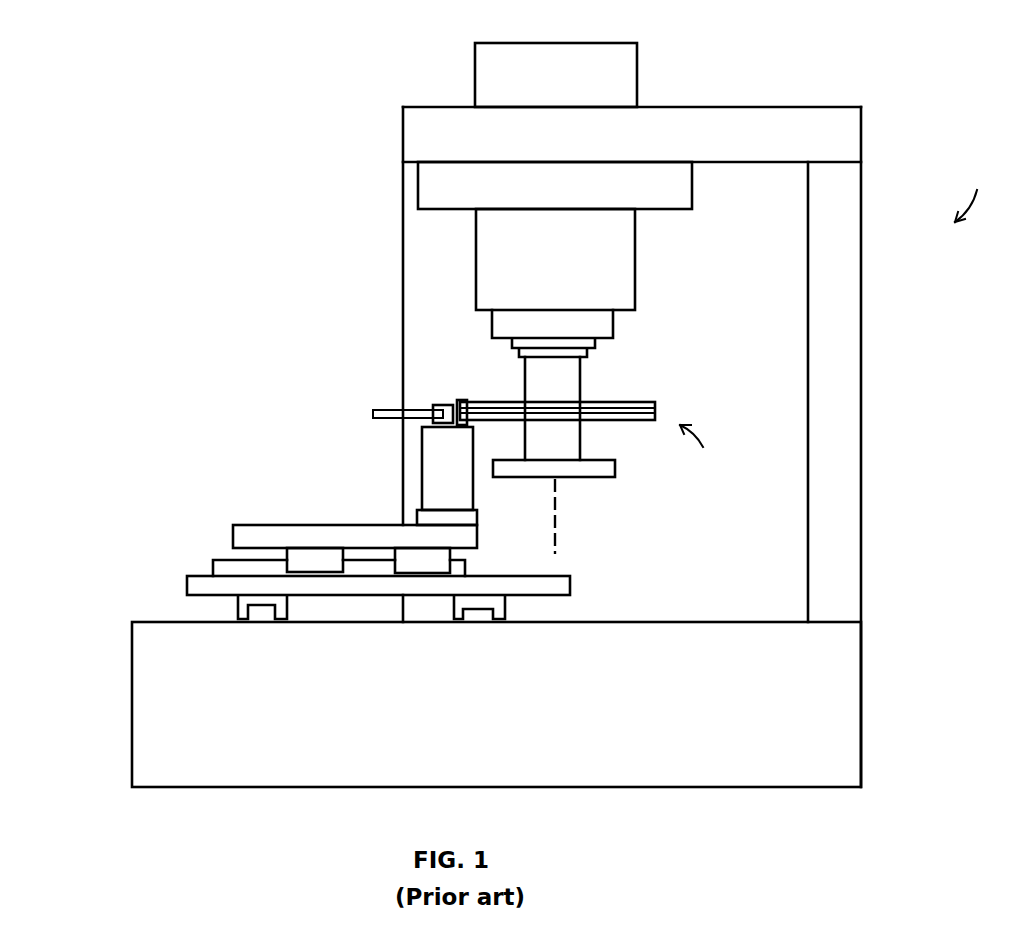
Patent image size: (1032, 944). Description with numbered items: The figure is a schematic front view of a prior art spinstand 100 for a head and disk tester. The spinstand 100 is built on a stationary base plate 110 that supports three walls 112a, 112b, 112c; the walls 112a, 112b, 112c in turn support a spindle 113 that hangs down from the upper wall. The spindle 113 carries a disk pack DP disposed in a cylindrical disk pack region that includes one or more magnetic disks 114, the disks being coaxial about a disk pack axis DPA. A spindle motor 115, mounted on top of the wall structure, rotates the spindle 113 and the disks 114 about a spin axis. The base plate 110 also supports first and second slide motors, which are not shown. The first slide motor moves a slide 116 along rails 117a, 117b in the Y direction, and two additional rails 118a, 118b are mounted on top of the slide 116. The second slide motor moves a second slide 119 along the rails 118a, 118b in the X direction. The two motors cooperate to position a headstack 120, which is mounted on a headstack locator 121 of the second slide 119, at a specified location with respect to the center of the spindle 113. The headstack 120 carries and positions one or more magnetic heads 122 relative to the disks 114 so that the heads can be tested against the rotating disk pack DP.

The spinstand 100 is at (980, 189).
The stationary base plate 110 is at (833, 727).
The wall 112a is at (832, 415).
The wall 112b is at (430, 297).
The wall 112c is at (713, 133).
The spindle 113 is at (587, 263).
The magnetic disk 114 is at (650, 402).
The spindle motor 115 is at (498, 78).
The slide 116 is at (200, 587).
The rail 117a is at (260, 613).
The rail 117b is at (482, 617).
The rail 118a is at (238, 570).
The rail 118b is at (404, 562).
The second slide 119 is at (360, 538).
The headstack 120 is at (448, 488).
The headstack locator 121 is at (477, 516).
The magnetic head 122 is at (528, 400).
The disk pack DP is at (719, 449).
The disk pack axis DPA is at (555, 518).